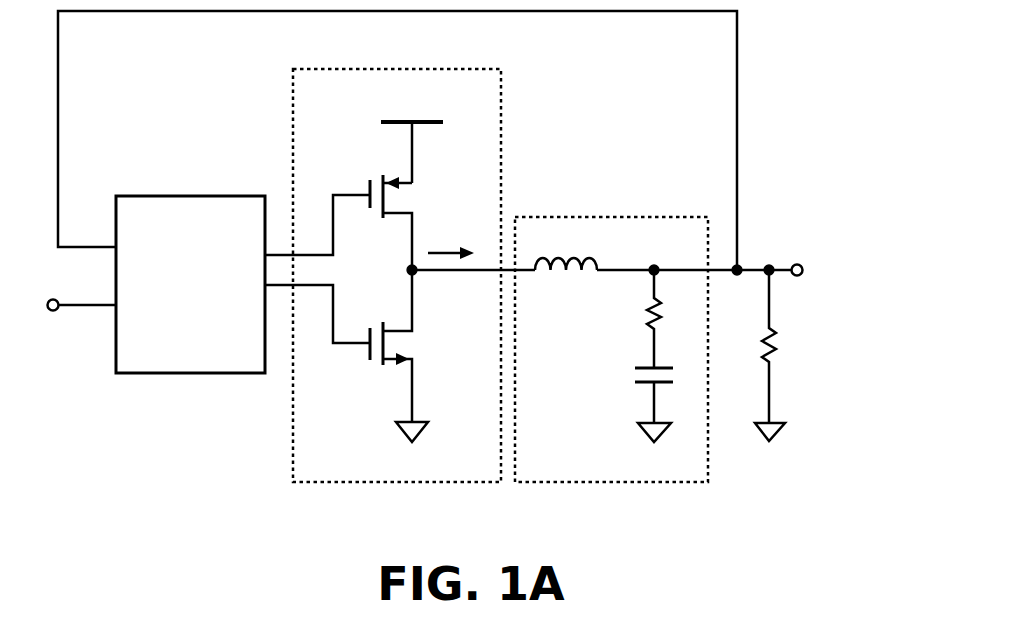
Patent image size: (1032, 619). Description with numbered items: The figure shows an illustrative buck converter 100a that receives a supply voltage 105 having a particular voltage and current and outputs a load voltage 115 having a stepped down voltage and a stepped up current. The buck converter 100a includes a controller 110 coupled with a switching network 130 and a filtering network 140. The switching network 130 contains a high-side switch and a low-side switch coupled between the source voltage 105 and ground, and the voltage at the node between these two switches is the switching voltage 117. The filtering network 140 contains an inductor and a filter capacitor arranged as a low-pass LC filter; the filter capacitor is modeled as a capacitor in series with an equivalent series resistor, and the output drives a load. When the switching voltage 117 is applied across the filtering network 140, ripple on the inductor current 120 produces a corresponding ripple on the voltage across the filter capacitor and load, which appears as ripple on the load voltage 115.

The buck converter 100a is at (818, 76).
The supply voltage 105 is at (450, 108).
The controller 110 is at (208, 311).
The load voltage 115 is at (813, 253).
The switching voltage 117 is at (415, 272).
The inductor current 120 is at (457, 239).
The switching network 130 is at (416, 265).
The filtering network 140 is at (708, 420).